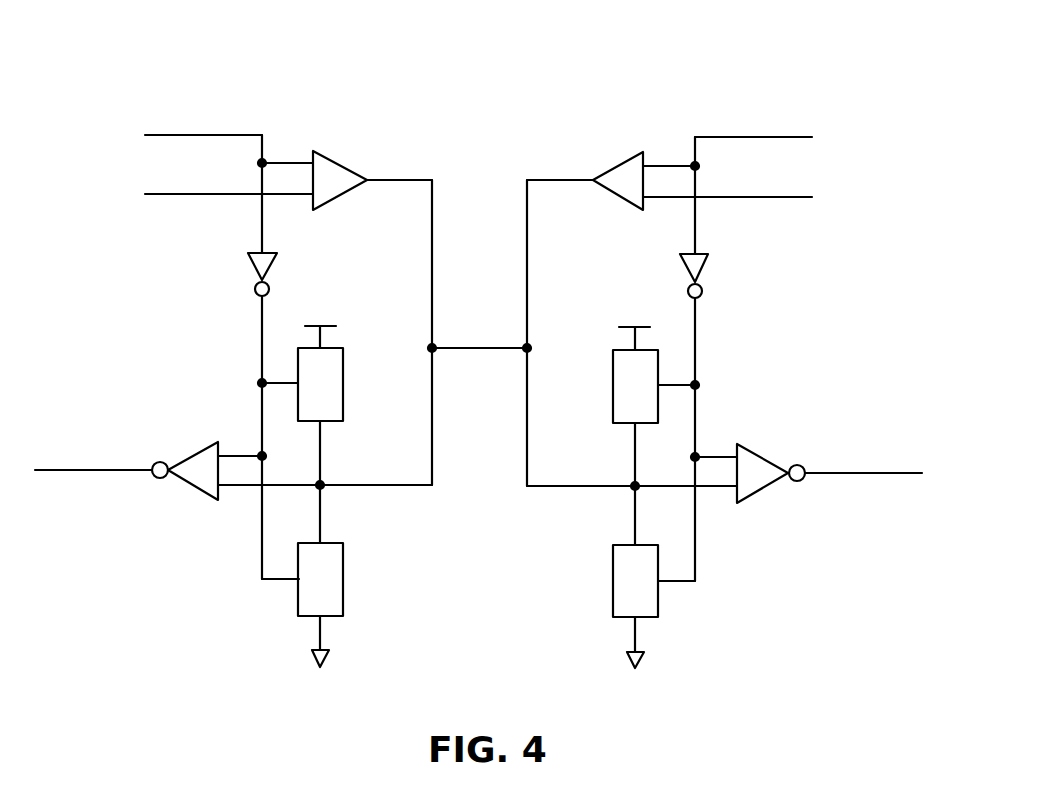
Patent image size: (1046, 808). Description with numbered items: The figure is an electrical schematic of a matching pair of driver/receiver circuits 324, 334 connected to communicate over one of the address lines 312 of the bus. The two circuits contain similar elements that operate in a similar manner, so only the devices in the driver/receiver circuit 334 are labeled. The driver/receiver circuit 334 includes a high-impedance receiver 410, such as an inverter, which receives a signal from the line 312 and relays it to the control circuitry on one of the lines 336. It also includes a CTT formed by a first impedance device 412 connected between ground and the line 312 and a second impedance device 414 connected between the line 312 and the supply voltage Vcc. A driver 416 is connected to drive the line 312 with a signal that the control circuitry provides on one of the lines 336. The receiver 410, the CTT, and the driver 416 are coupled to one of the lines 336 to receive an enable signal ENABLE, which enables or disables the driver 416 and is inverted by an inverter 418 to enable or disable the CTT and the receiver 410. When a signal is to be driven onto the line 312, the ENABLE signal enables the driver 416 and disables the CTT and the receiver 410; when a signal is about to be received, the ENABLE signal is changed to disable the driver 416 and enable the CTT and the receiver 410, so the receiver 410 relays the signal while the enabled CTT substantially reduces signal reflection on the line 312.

The driver/receiver circuit 324 is at (364, 90).
The driver/receiver circuit 334 is at (651, 90).
The lines 336 is at (762, 137).
The address line 312 is at (474, 349).
The driver 416 is at (619, 162).
The inverter 418 is at (701, 273).
The second impedance device 414 is at (613, 385).
The first impedance device 412 is at (613, 582).
The high-impedance receiver 410 is at (764, 458).